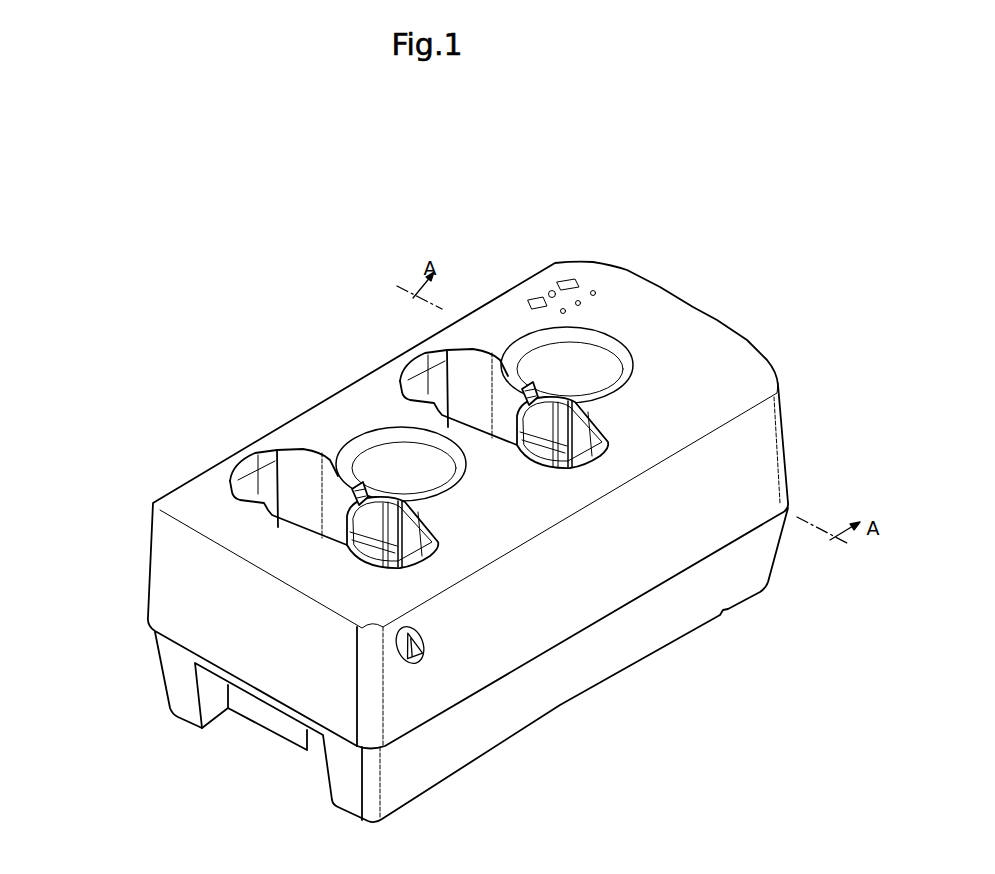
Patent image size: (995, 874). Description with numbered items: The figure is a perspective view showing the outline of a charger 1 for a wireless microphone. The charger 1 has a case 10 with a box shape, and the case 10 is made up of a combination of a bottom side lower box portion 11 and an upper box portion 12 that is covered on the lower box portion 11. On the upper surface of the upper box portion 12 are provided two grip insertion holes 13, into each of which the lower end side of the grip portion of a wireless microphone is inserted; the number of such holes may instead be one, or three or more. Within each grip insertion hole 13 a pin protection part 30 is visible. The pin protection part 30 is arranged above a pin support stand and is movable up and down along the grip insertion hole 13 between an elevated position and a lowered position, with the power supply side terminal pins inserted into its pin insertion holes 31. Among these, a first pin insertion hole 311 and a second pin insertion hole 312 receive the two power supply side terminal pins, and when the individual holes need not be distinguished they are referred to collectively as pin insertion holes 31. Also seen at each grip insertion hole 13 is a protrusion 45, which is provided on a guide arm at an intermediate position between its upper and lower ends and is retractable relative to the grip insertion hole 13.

The charger 1 is at (404, 495).
The case 10 is at (404, 542).
The lower box portion 11 is at (168, 673).
The upper box portion 12 is at (167, 595).
The grip insertion hole 13 is at (382, 456).
The pin protection part 30 is at (345, 510).
The pin insertion hole 31 is at (409, 529).
The first pin insertion hole 311 is at (347, 536).
The second pin insertion hole 312 is at (383, 543).
The protrusion 45 is at (357, 484).